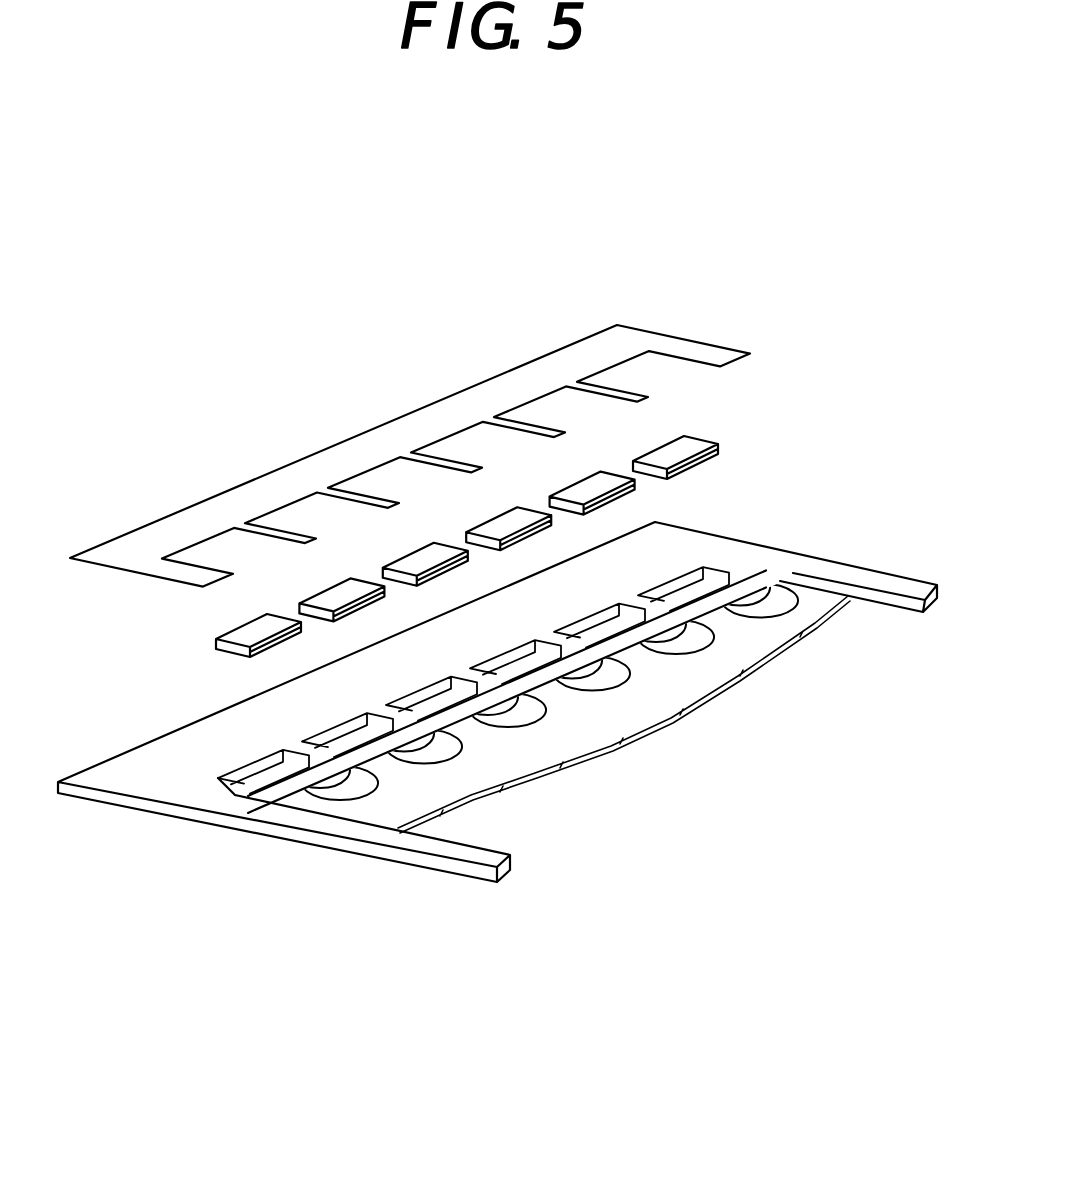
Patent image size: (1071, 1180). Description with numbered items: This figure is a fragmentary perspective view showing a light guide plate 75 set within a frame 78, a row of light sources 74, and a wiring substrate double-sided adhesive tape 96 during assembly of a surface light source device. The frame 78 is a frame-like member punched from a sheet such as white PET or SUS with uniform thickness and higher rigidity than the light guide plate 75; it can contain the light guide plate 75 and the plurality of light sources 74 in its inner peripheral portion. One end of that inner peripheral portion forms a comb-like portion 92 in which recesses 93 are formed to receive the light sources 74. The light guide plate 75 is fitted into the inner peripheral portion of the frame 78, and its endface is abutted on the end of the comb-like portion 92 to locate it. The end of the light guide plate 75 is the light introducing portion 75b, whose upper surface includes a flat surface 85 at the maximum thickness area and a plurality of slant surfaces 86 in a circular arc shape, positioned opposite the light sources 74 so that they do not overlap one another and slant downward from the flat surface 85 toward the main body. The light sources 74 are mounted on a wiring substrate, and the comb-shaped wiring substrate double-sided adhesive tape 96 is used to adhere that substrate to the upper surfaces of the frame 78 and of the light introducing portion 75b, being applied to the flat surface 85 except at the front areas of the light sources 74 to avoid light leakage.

The wiring substrate double-sided adhesive tape 96 is at (410, 427).
The light sources 74 is at (680, 462).
The frame 78 is at (182, 770).
The light guide plate 75 is at (590, 730).
The comb-like portion 92 is at (310, 752).
The recesses 93 is at (610, 628).
The flat surface 85 is at (325, 777).
The slant surfaces 86 is at (345, 792).
The light introducing portion 75b is at (522, 792).